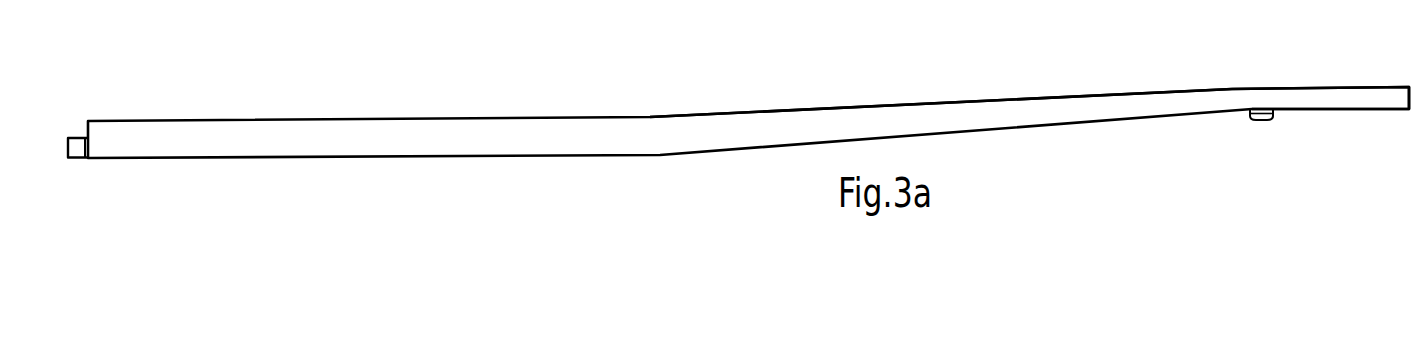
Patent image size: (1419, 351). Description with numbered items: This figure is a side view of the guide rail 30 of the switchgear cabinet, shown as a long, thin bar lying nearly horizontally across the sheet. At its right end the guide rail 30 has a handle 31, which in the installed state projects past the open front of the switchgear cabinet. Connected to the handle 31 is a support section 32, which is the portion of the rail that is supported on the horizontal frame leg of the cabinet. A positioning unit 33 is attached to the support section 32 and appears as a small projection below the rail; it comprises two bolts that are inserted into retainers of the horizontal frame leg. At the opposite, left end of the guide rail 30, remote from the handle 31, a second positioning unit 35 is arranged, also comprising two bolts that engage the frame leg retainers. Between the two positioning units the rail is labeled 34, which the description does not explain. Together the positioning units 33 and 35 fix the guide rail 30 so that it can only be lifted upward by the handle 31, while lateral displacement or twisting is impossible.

The guide rail 30 is at (673, 95).
The handle 31 is at (1348, 90).
The support section 32 is at (1227, 86).
The positioning unit 33 is at (1255, 121).
The inclined section 34 is at (849, 105).
The second positioning unit 35 is at (78, 140).